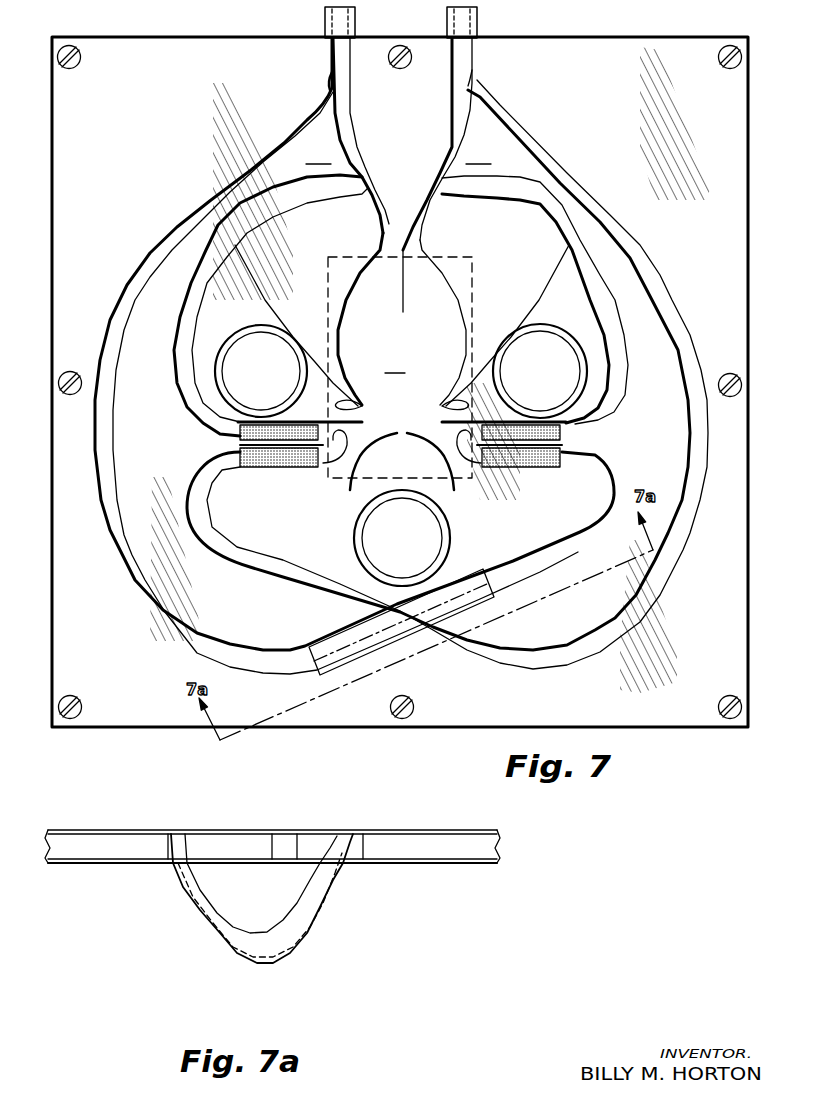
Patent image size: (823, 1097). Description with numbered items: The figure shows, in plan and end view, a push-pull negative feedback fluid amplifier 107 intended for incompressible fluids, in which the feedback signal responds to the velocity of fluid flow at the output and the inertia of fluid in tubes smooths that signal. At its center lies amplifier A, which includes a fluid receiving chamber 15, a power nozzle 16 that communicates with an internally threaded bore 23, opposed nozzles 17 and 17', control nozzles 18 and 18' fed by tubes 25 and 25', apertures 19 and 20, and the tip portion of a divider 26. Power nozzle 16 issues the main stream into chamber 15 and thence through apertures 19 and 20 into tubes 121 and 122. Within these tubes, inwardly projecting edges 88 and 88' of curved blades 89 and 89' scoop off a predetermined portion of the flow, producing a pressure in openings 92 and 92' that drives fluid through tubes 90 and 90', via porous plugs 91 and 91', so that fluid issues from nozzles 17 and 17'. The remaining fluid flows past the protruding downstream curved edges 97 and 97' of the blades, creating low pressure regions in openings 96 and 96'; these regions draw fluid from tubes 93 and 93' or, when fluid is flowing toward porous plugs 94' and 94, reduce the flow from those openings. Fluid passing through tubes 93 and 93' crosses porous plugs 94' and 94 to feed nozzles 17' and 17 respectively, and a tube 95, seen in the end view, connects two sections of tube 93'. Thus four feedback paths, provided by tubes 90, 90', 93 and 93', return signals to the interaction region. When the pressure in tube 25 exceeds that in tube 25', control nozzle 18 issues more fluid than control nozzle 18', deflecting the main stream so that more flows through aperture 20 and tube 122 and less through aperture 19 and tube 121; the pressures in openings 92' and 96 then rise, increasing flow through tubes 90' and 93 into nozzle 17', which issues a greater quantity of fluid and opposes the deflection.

In FIG. 7, the fluid receiving chamber 15 is at (395, 364).
In FIG. 7, the power nozzle 16 is at (422, 450).
In FIG. 7, the nozzle 17 is at (482, 473).
In FIG. 7, the nozzle 17' is at (337, 469).
In FIG. 7, the control nozzle 18 is at (442, 394).
In FIG. 7, the control nozzle 18' is at (363, 397).
In FIG. 7, the aperture 19 is at (423, 263).
In FIG. 7, the aperture 20 is at (371, 263).
In FIG. 7, the internally threaded bore 23 is at (445, 540).
In FIG. 7, the tube 25 is at (540, 362).
In FIG. 7, the tube 25' is at (261, 360).
In FIG. 7, the divider 26 is at (404, 307).
In FIG. 7, the inwardly projecting edge 88 is at (427, 144).
In FIG. 7, the inwardly projecting edge 88' is at (369, 135).
In FIG. 7, the curved blade 89 is at (455, 139).
In FIG. 7, the curved blade 89' is at (347, 131).
In FIG. 7, the tube 90 is at (535, 300).
In FIG. 7, the tube 90' is at (280, 305).
In FIG. 7, the porous plug 91 is at (537, 438).
In FIG. 7, the porous plug 91' is at (266, 438).
In FIG. 7, the opening 92 is at (520, 308).
In FIG. 7, the opening 92' is at (268, 305).
In FIG. 7, the tube 93 is at (457, 374).
In FIG. 7A, the tube 93 is at (304, 826).
In FIG. 7, the tube 93' is at (370, 344).
In FIG. 7A, the tube 93' is at (272, 828).
In FIG. 7, the porous plug 94 is at (521, 466).
In FIG. 7, the porous plug 94' is at (279, 465).
In FIG. 7A, the tube 95 is at (317, 930).
In FIG. 7, the opening 96 is at (491, 69).
In FIG. 7, the opening 96' is at (312, 68).
In FIG. 7, the downstream curved edge 97 is at (438, 364).
In FIG. 7, the downstream curved edge 97' is at (345, 371).
In FIG. 7, the negative feedback fluid amplifier 107 is at (654, 753).
In FIG. 7, the tube 121 is at (460, 62).
In FIG. 7, the tube 122 is at (343, 60).
In FIG. 7, the amplifier A is at (474, 300).